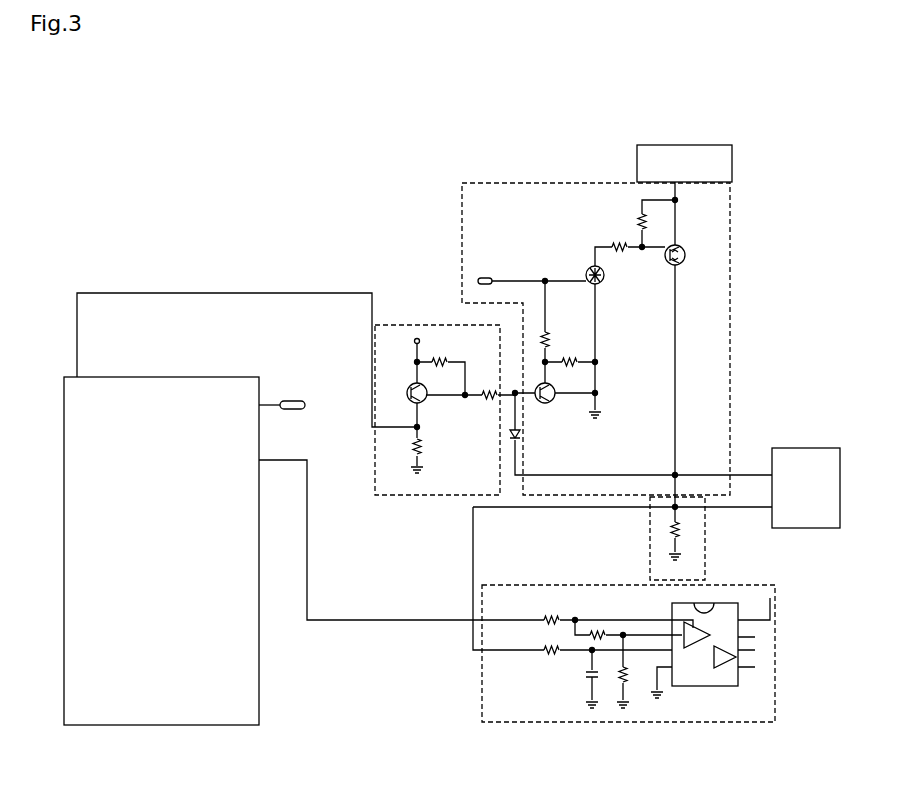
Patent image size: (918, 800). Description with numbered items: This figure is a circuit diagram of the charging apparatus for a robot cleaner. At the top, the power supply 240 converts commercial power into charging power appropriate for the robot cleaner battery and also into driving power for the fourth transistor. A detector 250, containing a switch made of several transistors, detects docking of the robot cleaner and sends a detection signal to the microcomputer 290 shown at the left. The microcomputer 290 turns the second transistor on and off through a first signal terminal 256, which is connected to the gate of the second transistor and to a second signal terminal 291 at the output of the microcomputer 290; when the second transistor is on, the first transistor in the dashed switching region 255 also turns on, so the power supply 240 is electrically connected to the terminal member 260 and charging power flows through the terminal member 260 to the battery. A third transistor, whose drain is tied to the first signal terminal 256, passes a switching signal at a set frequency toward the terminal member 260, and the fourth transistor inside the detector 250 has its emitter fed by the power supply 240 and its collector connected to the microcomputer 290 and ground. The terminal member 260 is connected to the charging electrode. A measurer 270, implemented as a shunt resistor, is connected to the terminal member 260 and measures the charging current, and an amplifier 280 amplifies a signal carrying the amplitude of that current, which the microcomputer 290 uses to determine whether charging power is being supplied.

The power supply 240 is at (685, 143).
The detector 250 is at (420, 322).
The power switching circuit 255 is at (732, 245).
The first signal terminal 256 is at (484, 277).
The terminal member 260 is at (788, 446).
The measurer 270 is at (706, 558).
The amplifier 280 is at (582, 583).
The microcomputer 290 is at (183, 373).
The second signal terminal 291 is at (293, 398).